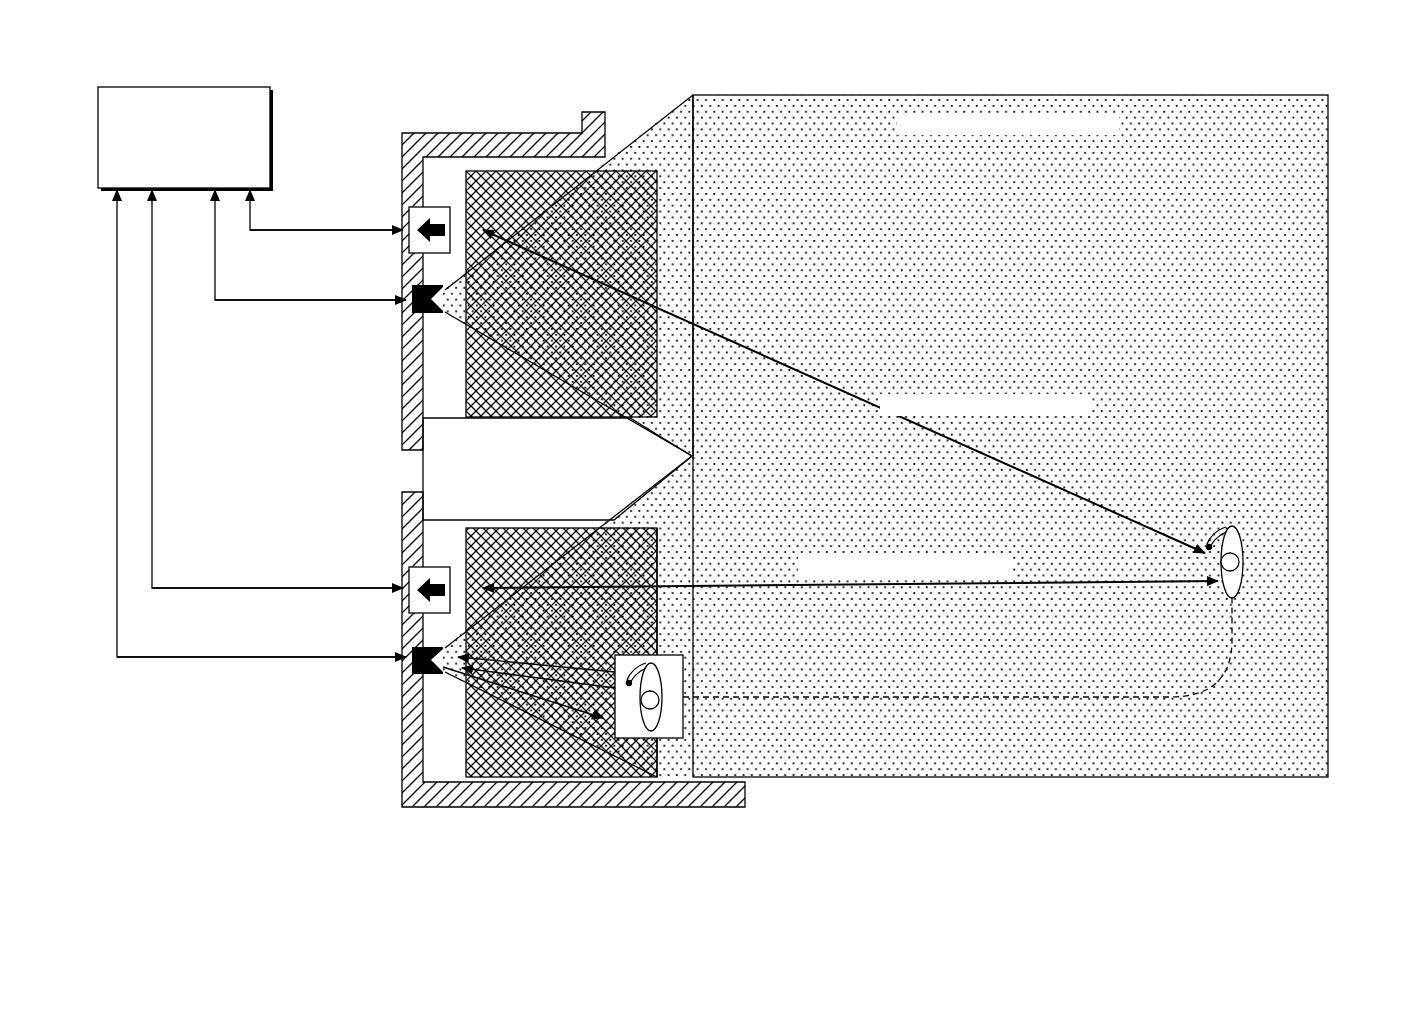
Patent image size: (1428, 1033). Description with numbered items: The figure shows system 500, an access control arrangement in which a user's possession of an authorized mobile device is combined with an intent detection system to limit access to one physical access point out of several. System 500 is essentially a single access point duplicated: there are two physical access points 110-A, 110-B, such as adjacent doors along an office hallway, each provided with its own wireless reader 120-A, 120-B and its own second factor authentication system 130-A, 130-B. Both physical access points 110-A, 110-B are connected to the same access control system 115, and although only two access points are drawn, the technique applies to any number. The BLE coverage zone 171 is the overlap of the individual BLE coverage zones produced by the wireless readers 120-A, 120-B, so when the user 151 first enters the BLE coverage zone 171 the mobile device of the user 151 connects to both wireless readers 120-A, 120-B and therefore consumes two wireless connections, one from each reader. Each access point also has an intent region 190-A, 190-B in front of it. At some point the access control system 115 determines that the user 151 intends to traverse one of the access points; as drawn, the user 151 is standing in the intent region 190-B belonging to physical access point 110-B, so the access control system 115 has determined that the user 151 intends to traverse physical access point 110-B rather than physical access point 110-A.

The system 500 is at (325, 28).
The access control system 115 is at (185, 87).
The physical access point 110-A is at (402, 435).
The physical access point 110-B is at (402, 795).
The wireless reader 120-A is at (403, 240).
The wireless reader 120-B is at (403, 600).
The second factor authentication system 130-A is at (412, 310).
The second factor authentication system 130-B is at (412, 670).
The intent region 190-A is at (465, 190).
The intent region 190-B is at (467, 742).
The BLE coverage zone 171 is at (1190, 112).
The user 151 is at (1240, 553).